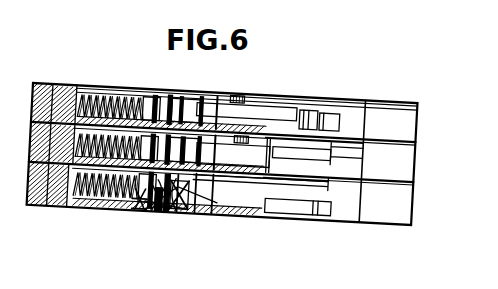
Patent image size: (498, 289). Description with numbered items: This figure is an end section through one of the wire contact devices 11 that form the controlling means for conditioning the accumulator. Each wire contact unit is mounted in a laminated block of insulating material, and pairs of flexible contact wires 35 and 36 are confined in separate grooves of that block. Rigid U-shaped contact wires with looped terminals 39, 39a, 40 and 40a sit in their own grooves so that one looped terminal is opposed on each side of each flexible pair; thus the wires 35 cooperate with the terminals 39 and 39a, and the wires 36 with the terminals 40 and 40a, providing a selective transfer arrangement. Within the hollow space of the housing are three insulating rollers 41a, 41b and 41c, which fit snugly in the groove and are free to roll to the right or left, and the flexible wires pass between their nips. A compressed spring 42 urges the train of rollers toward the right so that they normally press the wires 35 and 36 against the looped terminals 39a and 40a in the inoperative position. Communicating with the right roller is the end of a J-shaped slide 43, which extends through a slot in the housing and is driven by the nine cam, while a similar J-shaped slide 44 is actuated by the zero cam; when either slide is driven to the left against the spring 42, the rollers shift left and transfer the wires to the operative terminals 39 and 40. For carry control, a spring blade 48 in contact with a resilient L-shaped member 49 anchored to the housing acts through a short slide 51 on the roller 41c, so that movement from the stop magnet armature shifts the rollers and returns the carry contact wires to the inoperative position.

The wire contact device 11 is at (415, 162).
The compressed spring 42 is at (92, 95).
The insulating cylinder or roller 41a is at (147, 105).
The insulating cylinder or roller 41b is at (177, 107).
The insulating cylinder or roller 41c is at (222, 121).
The J-shaped slide 43 is at (340, 116).
The short slide 51 is at (268, 160).
The spring blade 48 is at (316, 166).
The resilient L-shaped member 49 is at (297, 176).
The J-shaped slide 44 is at (338, 208).
The pair of flexible contact wires 36 is at (222, 213).
The pair of flexible contact wires 35 is at (140, 196).
The looped terminal of rigid U-shaped contact wire 39 is at (134, 207).
The looped terminal of rigid U-shaped contact wire 39a is at (158, 209).
The looped terminal of rigid U-shaped contact wire 40 is at (166, 211).
The looped terminal of rigid U-shaped contact wire 40a is at (170, 206).